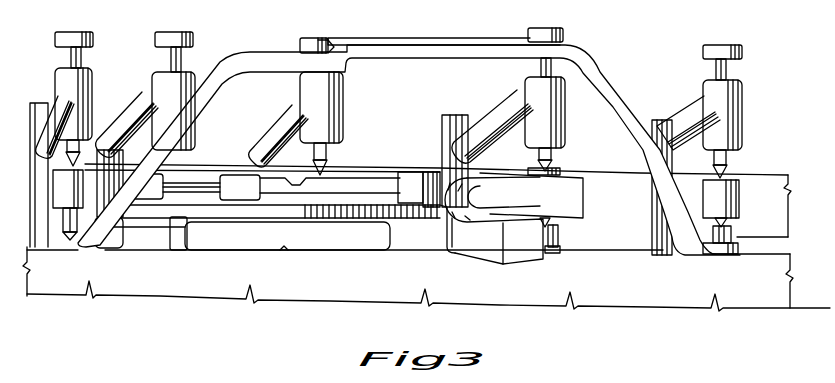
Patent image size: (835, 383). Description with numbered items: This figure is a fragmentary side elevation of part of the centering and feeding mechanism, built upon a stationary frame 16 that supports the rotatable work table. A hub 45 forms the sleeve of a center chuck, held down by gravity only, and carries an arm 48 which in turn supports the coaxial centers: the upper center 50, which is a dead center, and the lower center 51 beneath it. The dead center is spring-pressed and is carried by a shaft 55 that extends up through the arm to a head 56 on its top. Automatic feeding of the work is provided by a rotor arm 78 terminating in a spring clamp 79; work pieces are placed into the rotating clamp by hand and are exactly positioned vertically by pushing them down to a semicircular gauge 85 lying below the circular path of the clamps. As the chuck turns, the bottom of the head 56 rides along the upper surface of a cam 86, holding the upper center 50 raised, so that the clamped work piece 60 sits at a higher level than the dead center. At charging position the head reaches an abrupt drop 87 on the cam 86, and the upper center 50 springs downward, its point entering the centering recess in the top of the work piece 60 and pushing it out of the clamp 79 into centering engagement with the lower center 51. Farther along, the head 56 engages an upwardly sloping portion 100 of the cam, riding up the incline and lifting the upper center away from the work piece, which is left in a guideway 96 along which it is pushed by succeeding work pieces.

The stationary frame 16 is at (362, 286).
The hub 45 is at (643, 203).
The arm 48 is at (138, 104).
The upper center 50 is at (53, 143).
The lower center 51 is at (735, 230).
The shaft 55 is at (71, 57).
The head 56 is at (94, 40).
The work piece 60 is at (739, 201).
The rotor arm 78 is at (370, 188).
The spring clamp 79 is at (196, 187).
The semicircular gauge 85 is at (218, 200).
The cam 86 is at (467, 45).
The abrupt drop 87 is at (326, 35).
The guideway 96 is at (514, 216).
The upwardly sloping portion 100 is at (615, 88).